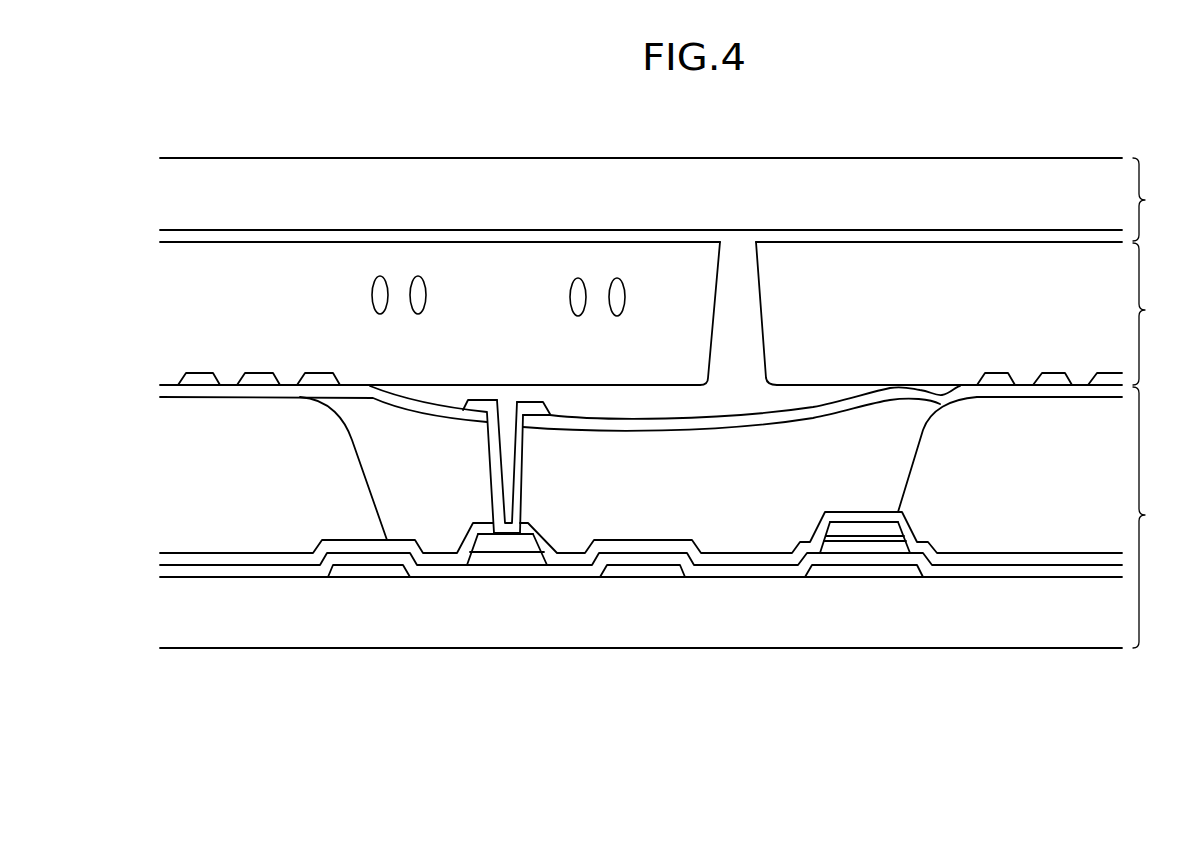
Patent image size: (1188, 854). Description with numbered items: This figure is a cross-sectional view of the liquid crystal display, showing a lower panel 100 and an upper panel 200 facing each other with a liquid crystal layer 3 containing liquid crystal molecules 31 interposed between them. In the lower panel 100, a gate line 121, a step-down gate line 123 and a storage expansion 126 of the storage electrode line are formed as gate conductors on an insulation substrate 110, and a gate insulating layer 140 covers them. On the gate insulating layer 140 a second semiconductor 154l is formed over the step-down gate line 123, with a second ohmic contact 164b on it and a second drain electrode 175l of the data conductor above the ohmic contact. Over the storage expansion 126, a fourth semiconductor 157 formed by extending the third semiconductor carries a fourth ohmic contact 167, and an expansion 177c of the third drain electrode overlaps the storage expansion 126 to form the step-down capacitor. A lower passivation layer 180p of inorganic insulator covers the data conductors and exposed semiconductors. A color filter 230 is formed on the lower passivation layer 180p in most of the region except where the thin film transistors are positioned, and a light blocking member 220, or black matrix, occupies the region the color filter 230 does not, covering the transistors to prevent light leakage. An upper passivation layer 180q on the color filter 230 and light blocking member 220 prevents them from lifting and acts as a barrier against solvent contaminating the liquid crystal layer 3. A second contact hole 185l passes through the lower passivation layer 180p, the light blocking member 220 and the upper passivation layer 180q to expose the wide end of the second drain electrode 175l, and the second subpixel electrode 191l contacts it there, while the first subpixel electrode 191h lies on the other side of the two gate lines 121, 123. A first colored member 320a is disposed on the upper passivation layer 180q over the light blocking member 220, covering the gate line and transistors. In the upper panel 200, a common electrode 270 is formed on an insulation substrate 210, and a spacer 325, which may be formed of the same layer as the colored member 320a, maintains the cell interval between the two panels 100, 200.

The insulation substrate 210 is at (731, 180).
The common electrode 270 is at (1013, 237).
The spacer 325 is at (748, 292).
The liquid crystal molecules 31 is at (659, 298).
The liquid crystal layer 3 is at (1149, 314).
The upper panel 200 is at (1159, 199).
The lower panel 100 is at (1159, 517).
The upper passivation layer 180q is at (902, 397).
The color filter 230 is at (1020, 683).
The light blocking member 220 is at (635, 488).
The first colored member 320a is at (583, 403).
The second subpixel electrode 191l is at (480, 398).
The second contact hole 185l is at (514, 447).
The first subpixel electrode 191h is at (1107, 378).
The lower passivation layer 180p is at (248, 558).
The gate insulating layer 140 is at (748, 565).
The insulation substrate 110 is at (612, 628).
The step-down gate line 123 is at (368, 570).
The gate line 121 is at (660, 568).
The storage expansion 126 is at (828, 568).
The second semiconductor 154l is at (483, 558).
The second ohmic contact 164b is at (502, 550).
The second drain electrode 175l is at (517, 542).
The fourth semiconductor 157 is at (857, 547).
The fourth ohmic contact 167 is at (870, 538).
The expansion of the third drain electrode 177c is at (885, 528).